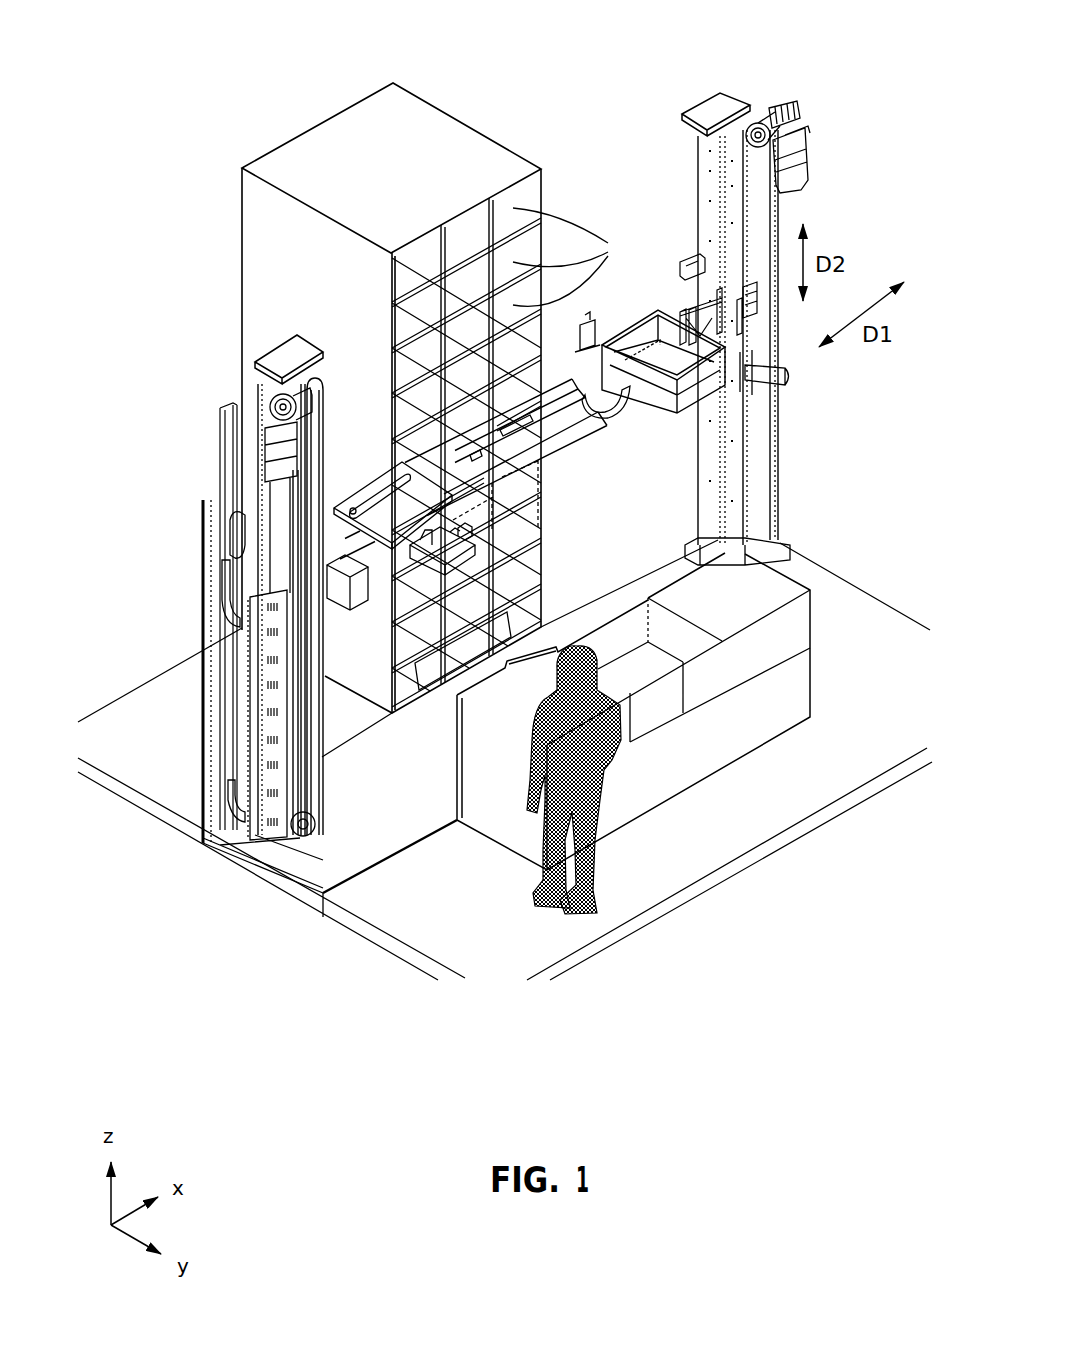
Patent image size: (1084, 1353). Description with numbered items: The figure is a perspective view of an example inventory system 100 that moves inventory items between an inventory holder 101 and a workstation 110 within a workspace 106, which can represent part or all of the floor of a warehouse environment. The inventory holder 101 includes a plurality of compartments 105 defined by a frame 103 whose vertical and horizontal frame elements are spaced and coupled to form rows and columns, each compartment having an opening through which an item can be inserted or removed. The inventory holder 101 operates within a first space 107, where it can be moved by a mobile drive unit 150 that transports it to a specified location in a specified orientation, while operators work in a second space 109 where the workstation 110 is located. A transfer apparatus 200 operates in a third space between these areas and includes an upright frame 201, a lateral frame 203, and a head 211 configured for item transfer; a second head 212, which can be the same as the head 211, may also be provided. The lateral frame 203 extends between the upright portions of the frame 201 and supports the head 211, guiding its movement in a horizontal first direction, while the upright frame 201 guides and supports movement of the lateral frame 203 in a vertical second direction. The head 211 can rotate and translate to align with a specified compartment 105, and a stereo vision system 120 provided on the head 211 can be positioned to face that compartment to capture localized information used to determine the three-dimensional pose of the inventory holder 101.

The inventory system 100 is at (155, 120).
The inventory holder 101 is at (484, 127).
The frame 103 is at (546, 184).
The compartments 105 is at (581, 257).
The workspace 106 is at (150, 665).
The first space 107 is at (138, 738).
The second space 109 is at (385, 913).
The workstation 110 is at (790, 582).
The stereo vision system 120 is at (398, 480).
The mobile drive unit 150 is at (511, 620).
The transfer apparatus 200 is at (762, 88).
The upright frame 201 is at (697, 180).
The lateral frame 203 is at (565, 445).
The head 211 is at (360, 490).
The second head 212 is at (638, 417).